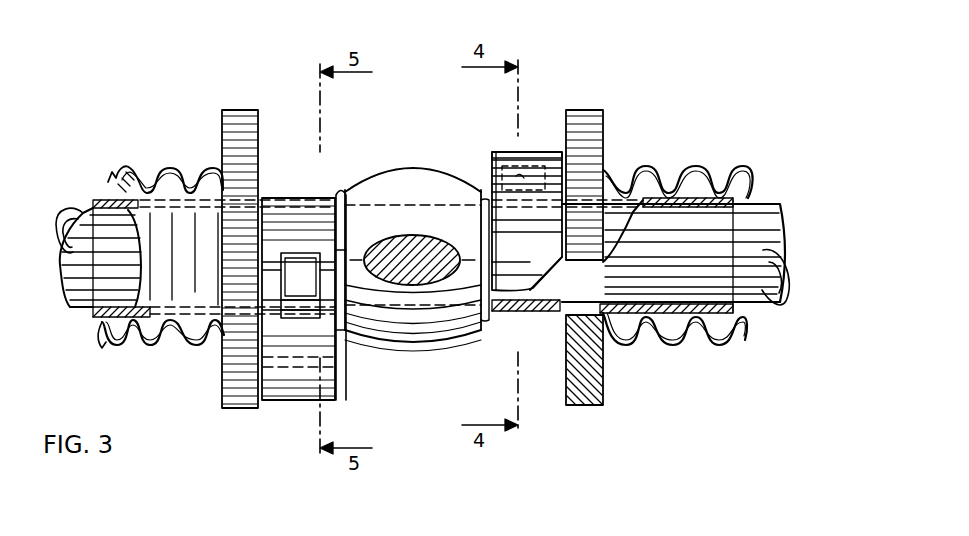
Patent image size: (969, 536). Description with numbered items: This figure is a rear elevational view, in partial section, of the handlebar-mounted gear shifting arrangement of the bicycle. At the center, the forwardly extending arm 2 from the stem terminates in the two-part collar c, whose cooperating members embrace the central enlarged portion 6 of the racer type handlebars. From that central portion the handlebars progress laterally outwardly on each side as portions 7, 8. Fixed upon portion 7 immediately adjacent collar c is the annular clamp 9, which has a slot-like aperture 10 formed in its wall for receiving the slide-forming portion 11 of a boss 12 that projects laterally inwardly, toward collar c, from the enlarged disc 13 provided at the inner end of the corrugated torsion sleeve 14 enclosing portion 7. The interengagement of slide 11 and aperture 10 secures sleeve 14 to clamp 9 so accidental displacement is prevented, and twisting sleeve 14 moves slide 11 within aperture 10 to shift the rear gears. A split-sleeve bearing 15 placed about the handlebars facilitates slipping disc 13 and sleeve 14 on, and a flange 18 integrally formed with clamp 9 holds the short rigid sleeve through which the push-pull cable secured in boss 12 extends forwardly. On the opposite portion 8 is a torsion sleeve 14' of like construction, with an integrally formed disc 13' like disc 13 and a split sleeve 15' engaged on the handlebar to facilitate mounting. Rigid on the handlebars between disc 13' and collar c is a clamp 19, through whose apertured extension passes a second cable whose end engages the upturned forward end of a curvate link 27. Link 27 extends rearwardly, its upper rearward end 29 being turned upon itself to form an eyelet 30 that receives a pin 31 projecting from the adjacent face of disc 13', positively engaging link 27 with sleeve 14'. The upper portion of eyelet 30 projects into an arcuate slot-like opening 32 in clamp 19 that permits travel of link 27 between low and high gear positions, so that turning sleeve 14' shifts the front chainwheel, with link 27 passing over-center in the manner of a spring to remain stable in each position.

The forwardly extending arm 2 is at (432, 284).
The collar c is at (420, 345).
The central enlarged portion 6 is at (490, 205).
The laterally outward handlebar portion 7 is at (766, 205).
The laterally outward handlebar portion 8 is at (75, 312).
The annular clamp 9 is at (534, 313).
The slot-like aperture 10 is at (530, 250).
The slide-forming portion 11 is at (555, 192).
The boss 12 is at (538, 200).
The disc 13 is at (603, 301).
The disc 13' is at (208, 300).
The torsion sleeve 14 is at (713, 219).
The torsion sleeve 14' is at (136, 290).
The bearing 15 is at (744, 163).
The split sleeve 15' is at (174, 298).
The flange 18 is at (560, 200).
The clamp 19 is at (268, 268).
The link 27 is at (303, 400).
The upper rearward end 29 is at (287, 400).
The eyelet 30 is at (275, 398).
The pin 31 is at (342, 382).
The slot-like opening 32 is at (283, 282).